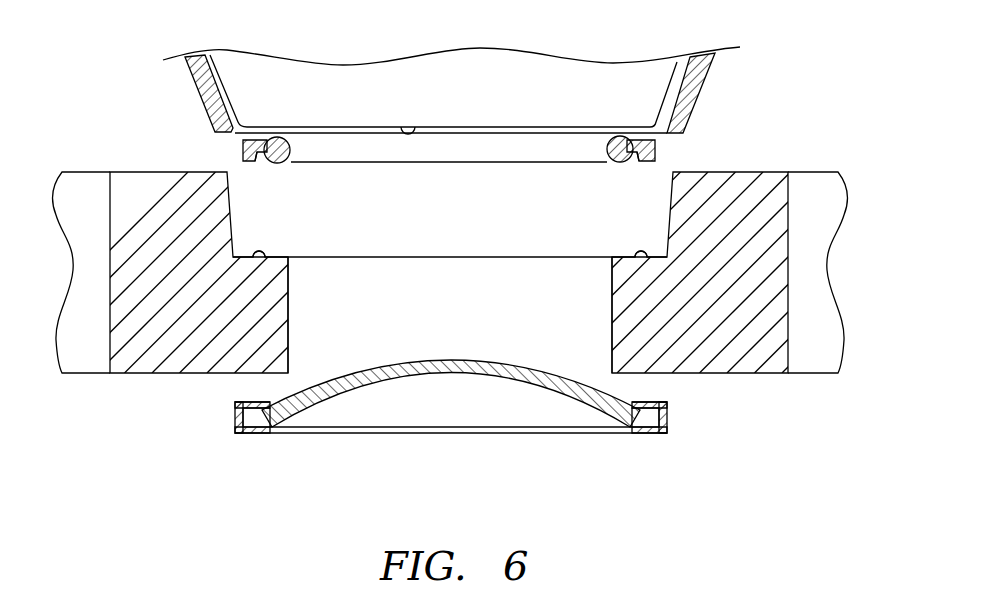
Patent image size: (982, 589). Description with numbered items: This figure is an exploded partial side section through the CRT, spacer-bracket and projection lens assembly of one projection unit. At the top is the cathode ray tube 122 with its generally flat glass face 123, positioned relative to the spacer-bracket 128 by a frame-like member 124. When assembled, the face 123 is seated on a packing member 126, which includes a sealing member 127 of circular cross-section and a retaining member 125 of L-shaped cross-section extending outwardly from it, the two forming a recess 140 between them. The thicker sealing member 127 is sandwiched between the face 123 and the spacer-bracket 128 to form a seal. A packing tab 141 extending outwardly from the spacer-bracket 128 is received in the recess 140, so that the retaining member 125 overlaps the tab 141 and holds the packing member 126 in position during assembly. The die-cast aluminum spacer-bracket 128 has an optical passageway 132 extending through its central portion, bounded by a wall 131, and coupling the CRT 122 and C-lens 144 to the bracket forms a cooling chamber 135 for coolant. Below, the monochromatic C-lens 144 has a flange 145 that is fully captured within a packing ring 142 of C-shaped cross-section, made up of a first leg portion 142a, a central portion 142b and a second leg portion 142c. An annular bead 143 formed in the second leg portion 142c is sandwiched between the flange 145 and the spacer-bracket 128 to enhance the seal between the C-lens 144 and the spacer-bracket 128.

The cathode ray tube 122 is at (513, 80).
The face 123 is at (409, 120).
The frame-like member 124 is at (212, 104).
The retaining member 125 is at (243, 152).
The packing member 126 is at (440, 162).
The sealing member 127 is at (281, 151).
The spacer-bracket 128 is at (774, 170).
The cavity wall 131 is at (610, 300).
The optical passageway 132 is at (412, 290).
The cooling chamber 135 is at (356, 284).
The recess 140 is at (260, 163).
The packing tab 141 is at (262, 250).
The packing ring 142 is at (448, 455).
The first leg portion 142a is at (257, 434).
The central portion 142b is at (234, 432).
The second leg portion 142c is at (235, 400).
The annular bead 143 is at (250, 400).
The C-lens 144 is at (522, 386).
The flange 145 is at (256, 418).